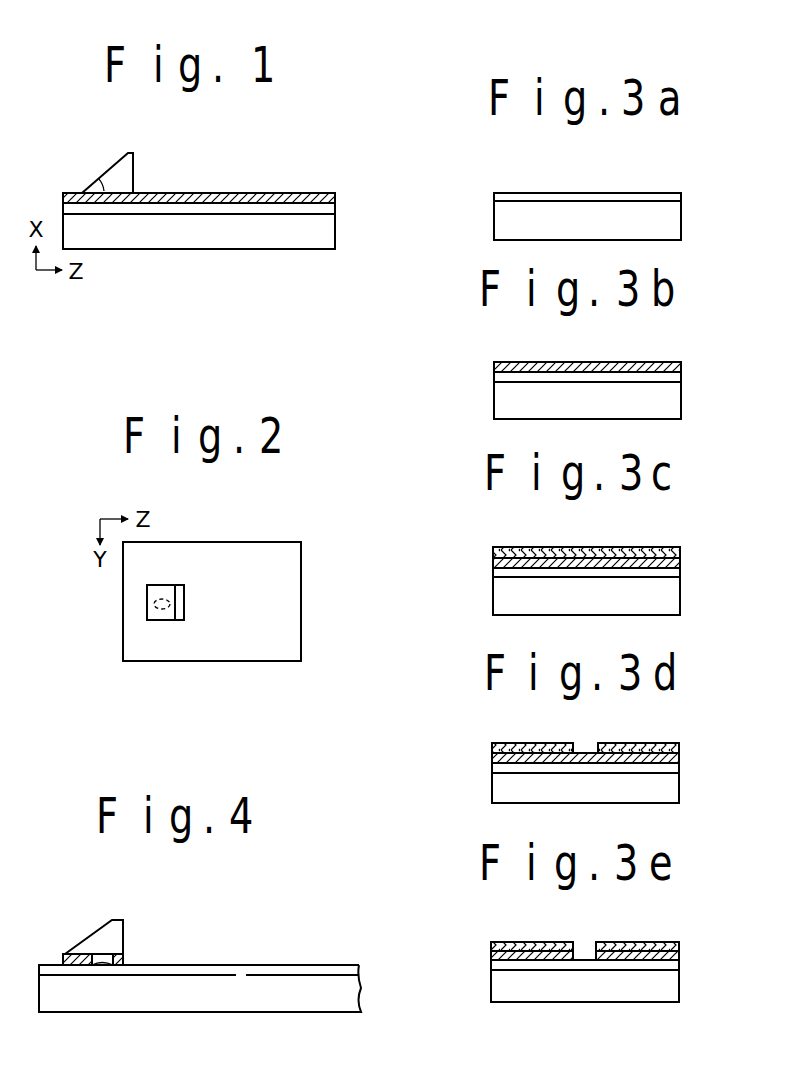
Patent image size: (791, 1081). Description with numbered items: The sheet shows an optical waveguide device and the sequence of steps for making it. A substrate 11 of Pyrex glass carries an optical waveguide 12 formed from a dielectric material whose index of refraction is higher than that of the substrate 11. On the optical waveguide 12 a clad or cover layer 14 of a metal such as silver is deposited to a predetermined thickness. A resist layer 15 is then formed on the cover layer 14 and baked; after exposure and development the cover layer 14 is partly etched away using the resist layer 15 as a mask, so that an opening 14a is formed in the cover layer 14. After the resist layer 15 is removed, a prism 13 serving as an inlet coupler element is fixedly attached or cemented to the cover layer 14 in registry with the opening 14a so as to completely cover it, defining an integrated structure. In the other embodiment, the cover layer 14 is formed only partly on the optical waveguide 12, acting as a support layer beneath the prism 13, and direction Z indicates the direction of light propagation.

In FIG. 1, the substrate 11 is at (200, 232).
In FIG. 4, the substrate 11 is at (258, 988).
In FIG. 3A, the substrate 11 is at (612, 212).
In FIG. 3B, the substrate 11 is at (526, 392).
In FIG. 3C, the substrate 11 is at (528, 585).
In FIG. 3D, the substrate 11 is at (505, 790).
In FIG. 3E, the substrate 11 is at (500, 985).
In FIG. 1, the optical waveguide 12 is at (260, 207).
In FIG. 4, the optical waveguide 12 is at (197, 970).
In FIG. 3A, the optical waveguide 12 is at (551, 197).
In FIG. 3B, the optical waveguide 12 is at (580, 376).
In FIG. 3C, the optical waveguide 12 is at (571, 573).
In FIG. 3D, the optical waveguide 12 is at (545, 768).
In FIG. 3E, the optical waveguide 12 is at (537, 965).
In FIG. 1, the prism 13 is at (121, 160).
In FIG. 2, the prism 13 is at (168, 590).
In FIG. 4, the prism 13 is at (103, 932).
In FIG. 1, the cover layer 14 is at (210, 197).
In FIG. 2, the cover layer 14 is at (255, 563).
In FIG. 4, the cover layer 14 is at (77, 952).
In FIG. 3B, the cover layer 14 is at (628, 367).
In FIG. 3C, the cover layer 14 is at (615, 563).
In FIG. 3D, the cover layer 14 is at (615, 758).
In FIG. 3E, the cover layer 14 is at (663, 956).
In FIG. 1, the opening 14a is at (108, 198).
In FIG. 2, the opening 14a is at (150, 607).
In FIG. 4, the opening 14a is at (100, 967).
In FIG. 3E, the opening 14a is at (575, 957).
In FIG. 3C, the resist layer 15 is at (660, 552).
In FIG. 3D, the resist layer 15 is at (660, 748).
In FIG. 3E, the resist layer 15 is at (627, 948).